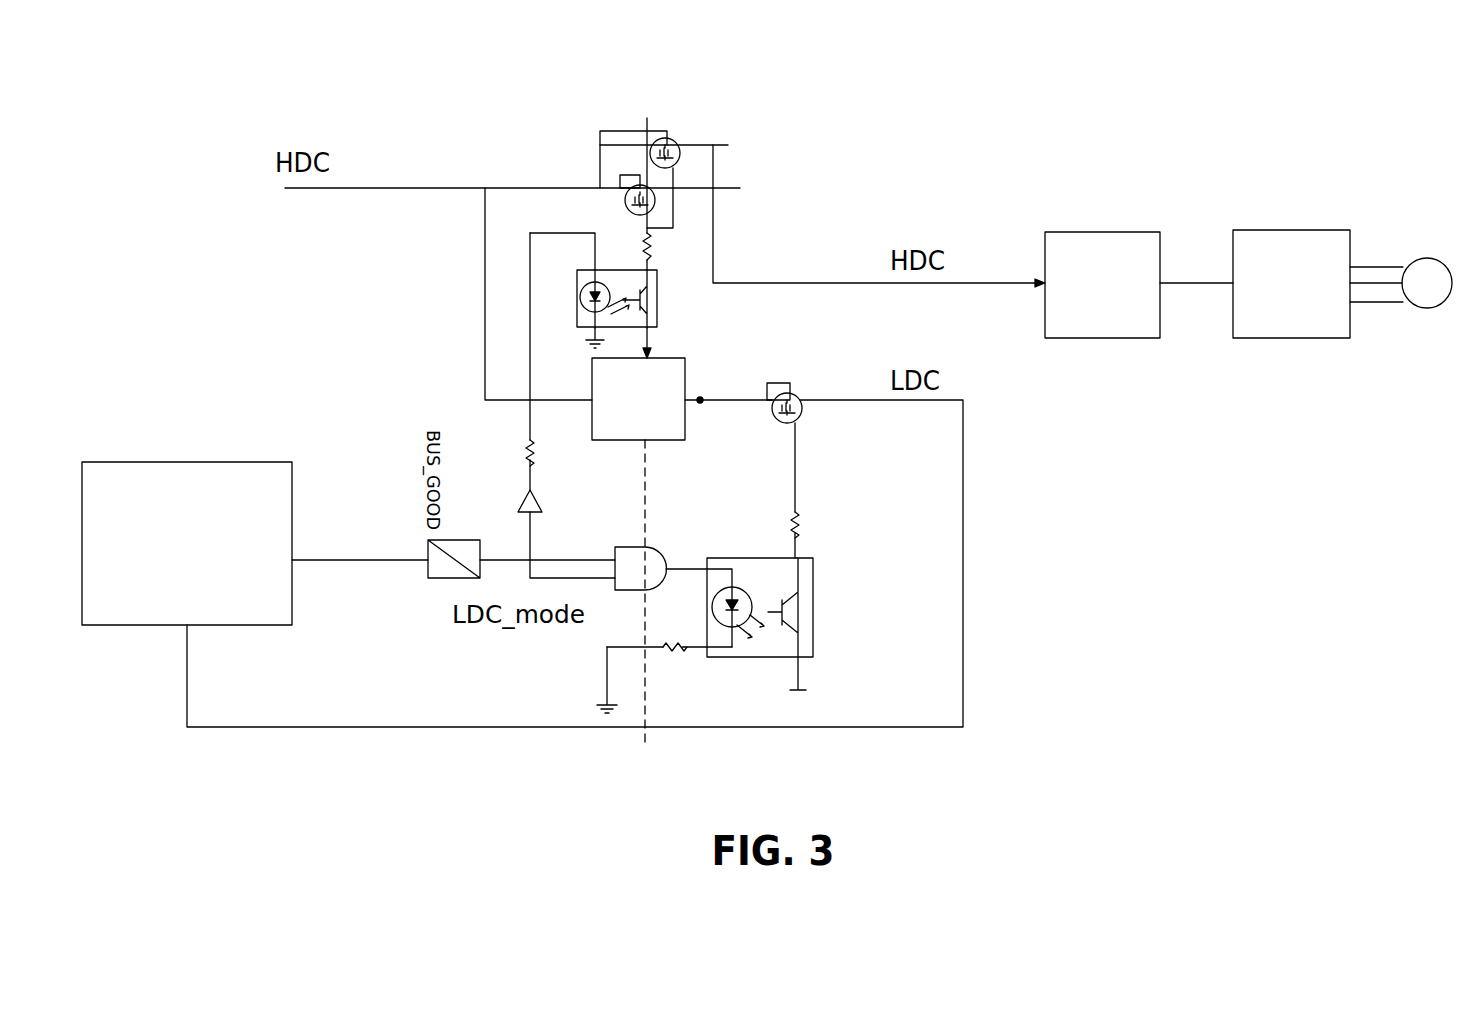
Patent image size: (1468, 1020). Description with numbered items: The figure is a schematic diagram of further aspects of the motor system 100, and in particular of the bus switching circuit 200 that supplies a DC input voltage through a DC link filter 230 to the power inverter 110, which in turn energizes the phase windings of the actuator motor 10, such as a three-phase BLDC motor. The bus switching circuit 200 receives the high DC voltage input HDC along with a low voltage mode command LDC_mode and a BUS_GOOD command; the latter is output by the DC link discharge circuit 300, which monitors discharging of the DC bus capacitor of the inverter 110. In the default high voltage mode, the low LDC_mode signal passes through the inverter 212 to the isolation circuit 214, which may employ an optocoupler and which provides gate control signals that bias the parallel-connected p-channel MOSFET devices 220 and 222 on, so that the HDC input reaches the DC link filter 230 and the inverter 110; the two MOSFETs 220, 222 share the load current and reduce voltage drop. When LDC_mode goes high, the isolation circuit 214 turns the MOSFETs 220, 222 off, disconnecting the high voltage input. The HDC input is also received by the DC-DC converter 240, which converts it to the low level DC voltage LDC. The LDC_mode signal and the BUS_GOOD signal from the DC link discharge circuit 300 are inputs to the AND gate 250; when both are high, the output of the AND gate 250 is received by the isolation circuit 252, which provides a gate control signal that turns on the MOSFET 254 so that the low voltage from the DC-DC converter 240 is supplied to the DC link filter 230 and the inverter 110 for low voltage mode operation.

The motor system 100 is at (1152, 130).
The bus switching circuit 200 is at (917, 191).
The DC link filter 230 is at (1095, 245).
The power inverter 110 is at (1285, 252).
The actuator motor 10 is at (1427, 306).
The p-channel MOSFET device 220 is at (672, 143).
The p-channel MOSFET device 222 is at (626, 206).
The isolation circuit 214 is at (657, 300).
The DC-DC converter 240 is at (674, 383).
The MOSFET 254 is at (790, 390).
The inverter 212 is at (545, 500).
The AND gate 250 is at (652, 558).
The isolation circuit 252 is at (813, 605).
The DC link discharge circuit 300 is at (187, 543).